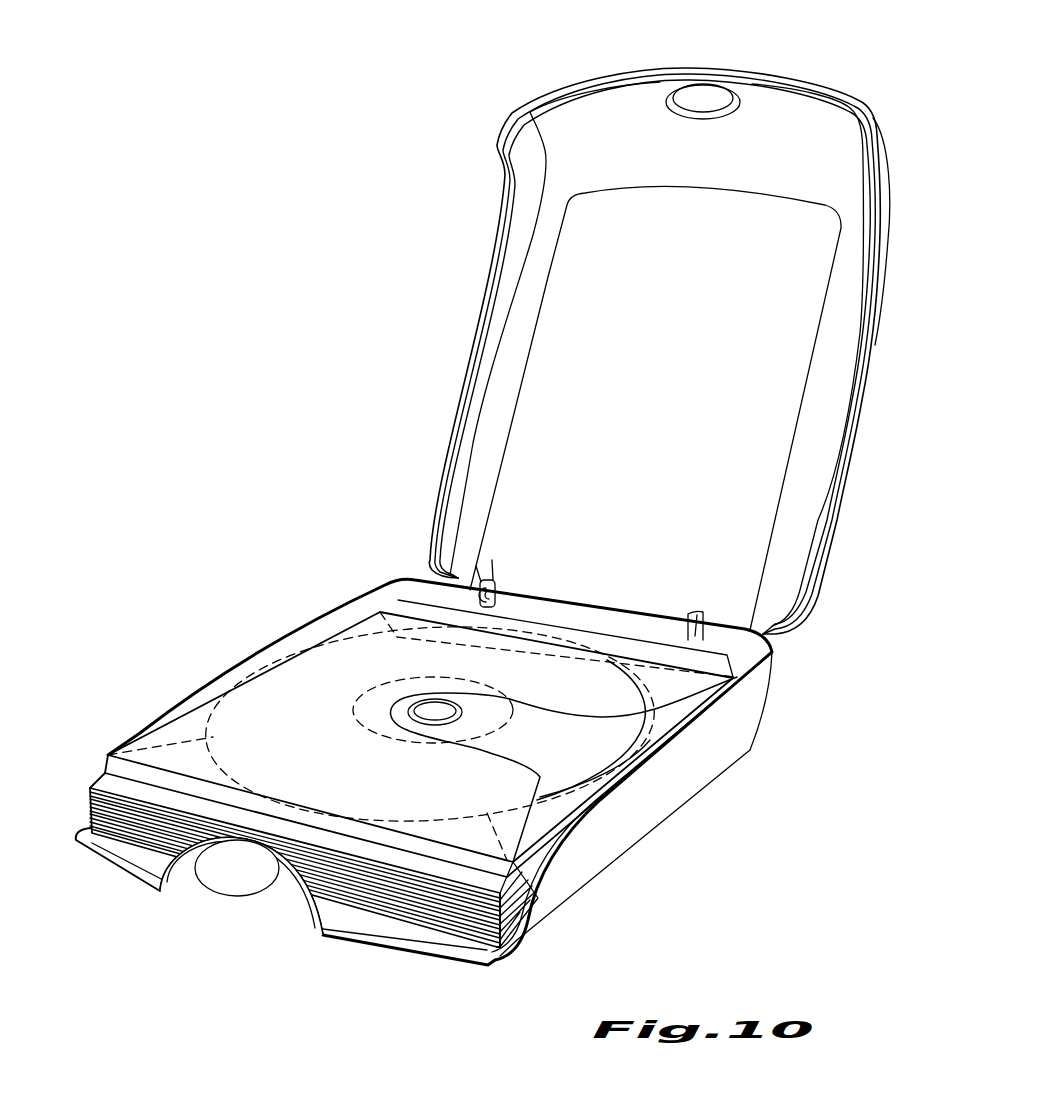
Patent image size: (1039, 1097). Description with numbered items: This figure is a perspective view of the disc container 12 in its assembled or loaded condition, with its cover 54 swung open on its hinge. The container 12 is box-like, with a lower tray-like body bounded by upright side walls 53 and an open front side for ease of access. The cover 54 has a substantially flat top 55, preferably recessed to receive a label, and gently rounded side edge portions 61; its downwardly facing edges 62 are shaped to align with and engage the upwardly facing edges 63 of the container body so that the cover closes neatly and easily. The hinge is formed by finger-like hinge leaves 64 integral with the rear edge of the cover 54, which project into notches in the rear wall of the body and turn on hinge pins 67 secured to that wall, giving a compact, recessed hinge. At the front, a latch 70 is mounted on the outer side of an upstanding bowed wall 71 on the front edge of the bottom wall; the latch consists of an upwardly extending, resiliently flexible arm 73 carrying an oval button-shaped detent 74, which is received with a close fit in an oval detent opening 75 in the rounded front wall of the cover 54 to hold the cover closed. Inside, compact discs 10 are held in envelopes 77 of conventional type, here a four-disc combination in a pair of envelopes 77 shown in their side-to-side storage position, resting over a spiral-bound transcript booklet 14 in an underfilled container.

The compact disc 10 is at (593, 748).
The disc container 12 is at (445, 782).
The booklet 14 is at (510, 920).
The side wall 53 is at (445, 782).
The cover 54 is at (664, 329).
The top 55 is at (632, 396).
The side edge portion 61 is at (483, 393).
The downwardly facing edge 62 is at (478, 342).
The upwardly facing edge 63 is at (280, 633).
The hinge leaf 64 is at (490, 583).
The hinge pin 67 is at (492, 590).
The latch 70 is at (232, 912).
The bowed wall 71 is at (300, 915).
The resiliently flexible arm 73 is at (270, 895).
The detent 74 is at (238, 870).
The detent opening 75 is at (700, 92).
The envelope 77 is at (160, 738).